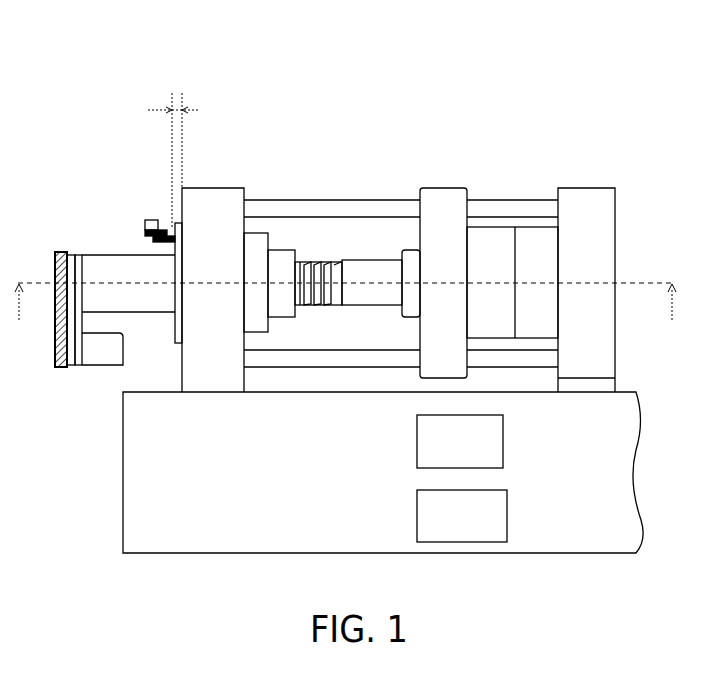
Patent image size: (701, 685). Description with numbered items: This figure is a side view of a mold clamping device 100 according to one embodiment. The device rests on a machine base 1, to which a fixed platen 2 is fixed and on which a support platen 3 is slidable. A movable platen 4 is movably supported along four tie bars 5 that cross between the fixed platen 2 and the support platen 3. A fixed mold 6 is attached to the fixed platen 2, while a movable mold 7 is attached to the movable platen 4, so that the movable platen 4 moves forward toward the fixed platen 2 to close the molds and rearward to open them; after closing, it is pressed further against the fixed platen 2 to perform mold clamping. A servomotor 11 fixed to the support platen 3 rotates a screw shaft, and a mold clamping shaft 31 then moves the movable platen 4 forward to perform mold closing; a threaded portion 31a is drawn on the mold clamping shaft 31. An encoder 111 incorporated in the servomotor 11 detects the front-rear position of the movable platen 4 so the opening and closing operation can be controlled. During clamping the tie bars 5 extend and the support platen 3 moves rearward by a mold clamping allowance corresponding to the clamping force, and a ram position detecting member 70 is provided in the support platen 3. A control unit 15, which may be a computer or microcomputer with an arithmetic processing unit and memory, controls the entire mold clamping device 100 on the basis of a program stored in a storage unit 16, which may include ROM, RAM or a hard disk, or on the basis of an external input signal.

The mold clamping device 100 is at (375, 18).
The machine base 1 is at (122, 466).
The fixed platen 2 is at (572, 186).
The support platen 3 is at (244, 188).
The movable platen 4 is at (436, 188).
The tie bars 5 is at (379, 199).
The fixed mold 6 is at (535, 217).
The movable mold 7 is at (492, 226).
The mold clamping shaft 31 is at (332, 234).
The threaded portion 31a is at (337, 257).
The ram position detecting member 70 is at (150, 222).
The servomotor 11 is at (103, 358).
The encoder 111 is at (92, 376).
The control unit 15 is at (503, 415).
The storage unit 16 is at (507, 490).